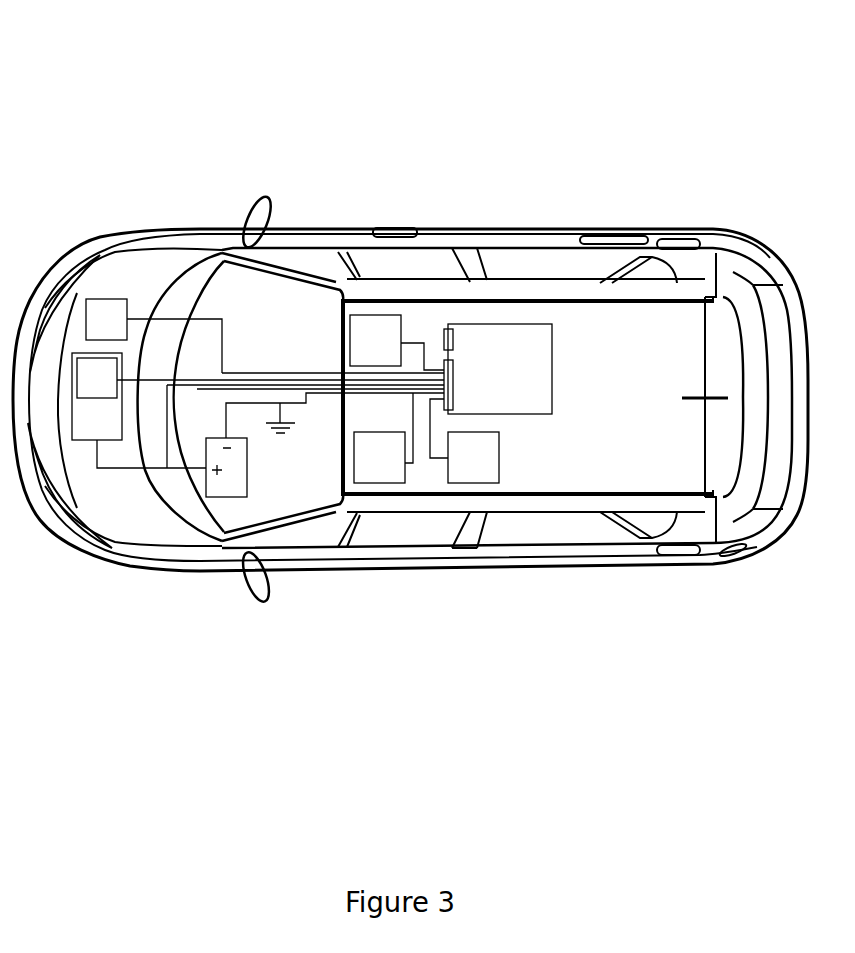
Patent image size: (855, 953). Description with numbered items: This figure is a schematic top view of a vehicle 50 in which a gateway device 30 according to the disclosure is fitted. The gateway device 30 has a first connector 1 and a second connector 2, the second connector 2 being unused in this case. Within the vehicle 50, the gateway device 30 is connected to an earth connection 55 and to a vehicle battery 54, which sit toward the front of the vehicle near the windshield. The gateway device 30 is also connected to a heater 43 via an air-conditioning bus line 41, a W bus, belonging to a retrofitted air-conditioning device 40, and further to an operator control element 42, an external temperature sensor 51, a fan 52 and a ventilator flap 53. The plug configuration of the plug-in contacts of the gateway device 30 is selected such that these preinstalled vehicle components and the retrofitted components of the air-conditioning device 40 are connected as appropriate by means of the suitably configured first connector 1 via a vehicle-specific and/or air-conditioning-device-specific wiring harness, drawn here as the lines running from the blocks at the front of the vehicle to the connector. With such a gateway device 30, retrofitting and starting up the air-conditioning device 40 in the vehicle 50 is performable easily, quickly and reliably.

The vehicle 50 is at (535, 78).
The air-conditioning bus line 41 is at (197, 380).
The external temperature sensor 51 is at (154, 336).
The air-conditioning device 40 is at (139, 410).
The heater 43 is at (97, 378).
The vehicle battery 54 is at (225, 498).
The earth connection 55 is at (288, 440).
The fan 52 is at (397, 342).
The ventilator flap 53 is at (383, 438).
The operator control element 42 is at (464, 441).
The gateway device 30 is at (500, 369).
The second connector 2 is at (456, 339).
The first connector 1 is at (456, 383).